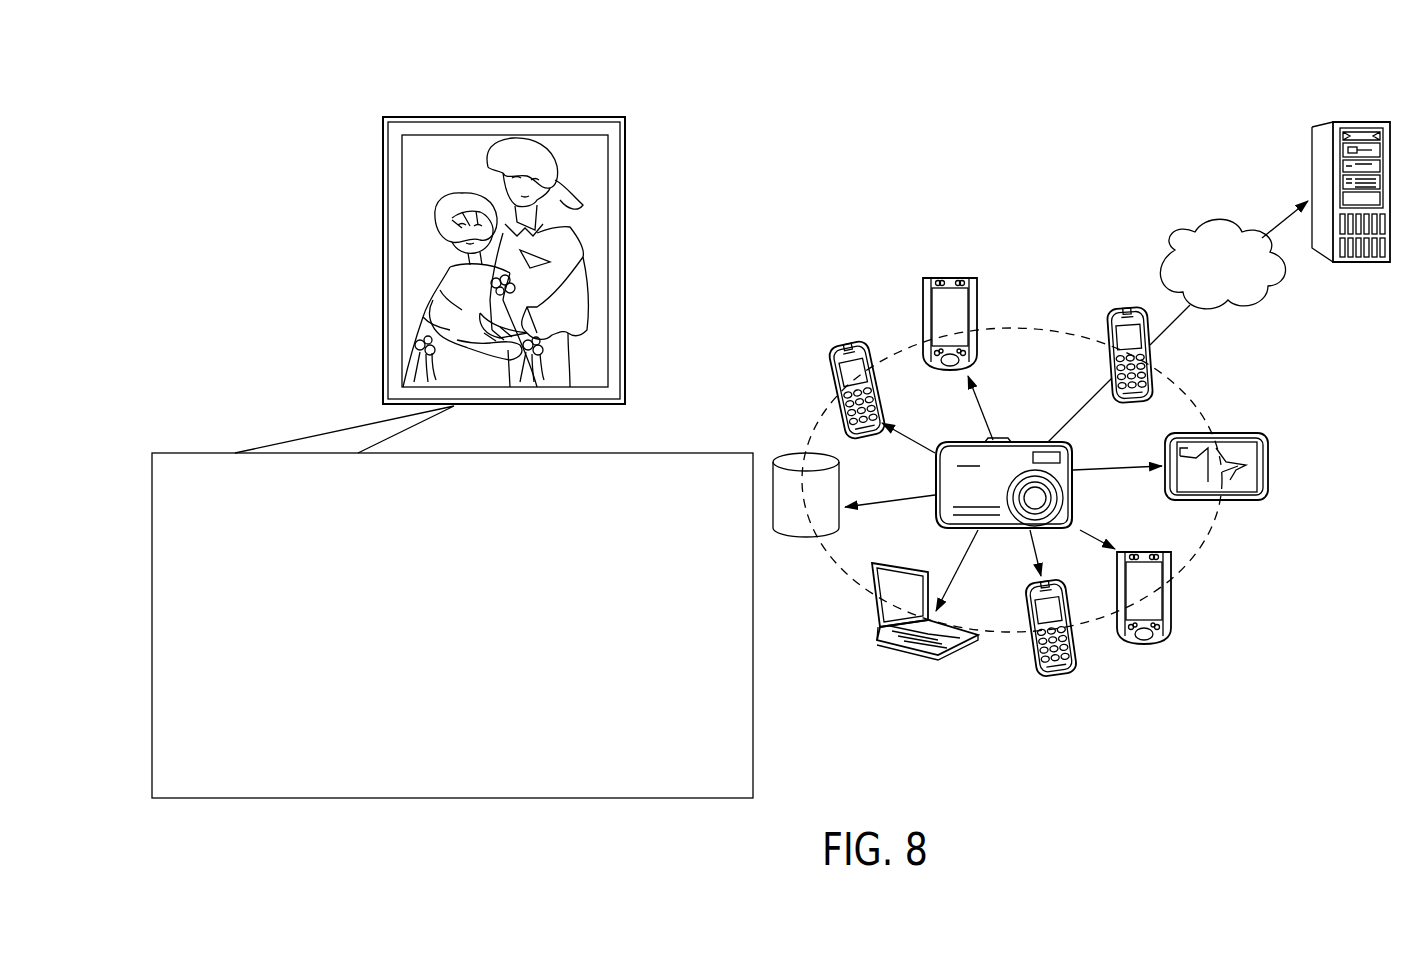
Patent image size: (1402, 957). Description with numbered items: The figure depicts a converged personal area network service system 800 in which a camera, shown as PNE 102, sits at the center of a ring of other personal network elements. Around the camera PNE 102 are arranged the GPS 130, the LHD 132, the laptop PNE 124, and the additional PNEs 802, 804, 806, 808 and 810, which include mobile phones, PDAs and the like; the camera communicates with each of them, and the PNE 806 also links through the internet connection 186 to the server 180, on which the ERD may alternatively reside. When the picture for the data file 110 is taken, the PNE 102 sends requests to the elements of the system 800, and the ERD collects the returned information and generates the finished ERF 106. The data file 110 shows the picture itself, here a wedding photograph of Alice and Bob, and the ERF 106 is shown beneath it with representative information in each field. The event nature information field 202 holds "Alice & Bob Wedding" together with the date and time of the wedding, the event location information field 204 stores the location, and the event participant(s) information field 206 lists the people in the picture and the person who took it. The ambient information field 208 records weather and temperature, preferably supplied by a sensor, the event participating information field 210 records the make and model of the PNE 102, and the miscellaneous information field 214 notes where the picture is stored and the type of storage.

The data file 110 is at (628, 147).
The ERF 106 is at (452, 598).
The converged personal area network service system 800 is at (836, 112).
The PNE 102 is at (1028, 441).
The LHD 132 is at (790, 451).
The PNE 810 is at (845, 340).
The PNE 808 is at (952, 275).
The PNE 806 is at (1128, 310).
The internet connection 186 is at (1245, 232).
The server 180 is at (1345, 120).
The GPS 130 is at (1268, 468).
The PNE 804 is at (1172, 630).
The PNE 802 is at (1070, 665).
The PNE 124 is at (932, 656).
The event nature information field 202 is at (597, 555).
The event location information field 204 is at (634, 607).
The event participant(s) information field 206 is at (457, 660).
The ambient information field 208 is at (497, 712).
The event participating information field 210 is at (635, 736).
The miscellaneous information field 214 is at (681, 766).